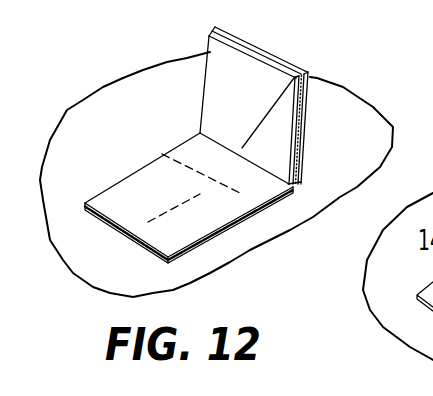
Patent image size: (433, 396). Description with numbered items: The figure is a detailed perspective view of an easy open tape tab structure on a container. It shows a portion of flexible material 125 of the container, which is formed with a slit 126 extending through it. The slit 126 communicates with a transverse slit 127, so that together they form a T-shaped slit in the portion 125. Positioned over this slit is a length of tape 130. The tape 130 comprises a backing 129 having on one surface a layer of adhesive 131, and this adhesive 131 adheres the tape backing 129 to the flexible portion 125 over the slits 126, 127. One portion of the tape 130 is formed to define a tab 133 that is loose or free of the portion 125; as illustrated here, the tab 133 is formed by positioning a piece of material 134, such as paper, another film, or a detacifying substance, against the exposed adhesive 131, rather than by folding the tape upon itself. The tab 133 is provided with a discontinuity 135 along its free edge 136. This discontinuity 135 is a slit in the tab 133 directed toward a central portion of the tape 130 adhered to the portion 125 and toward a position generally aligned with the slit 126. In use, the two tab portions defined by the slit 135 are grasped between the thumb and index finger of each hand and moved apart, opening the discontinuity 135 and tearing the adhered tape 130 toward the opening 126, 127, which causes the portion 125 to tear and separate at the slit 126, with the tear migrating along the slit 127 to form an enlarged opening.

The portion of flexible material 125 is at (87, 100).
The slit 126 is at (175, 210).
The transverse slit 127 is at (167, 157).
The backing 129 is at (113, 188).
The tape 130 is at (233, 240).
The layer of adhesive 131 is at (125, 238).
The tab 133 is at (214, 69).
The piece of material 134 is at (307, 123).
The discontinuity 135 is at (298, 67).
The free edge 136 is at (240, 42).